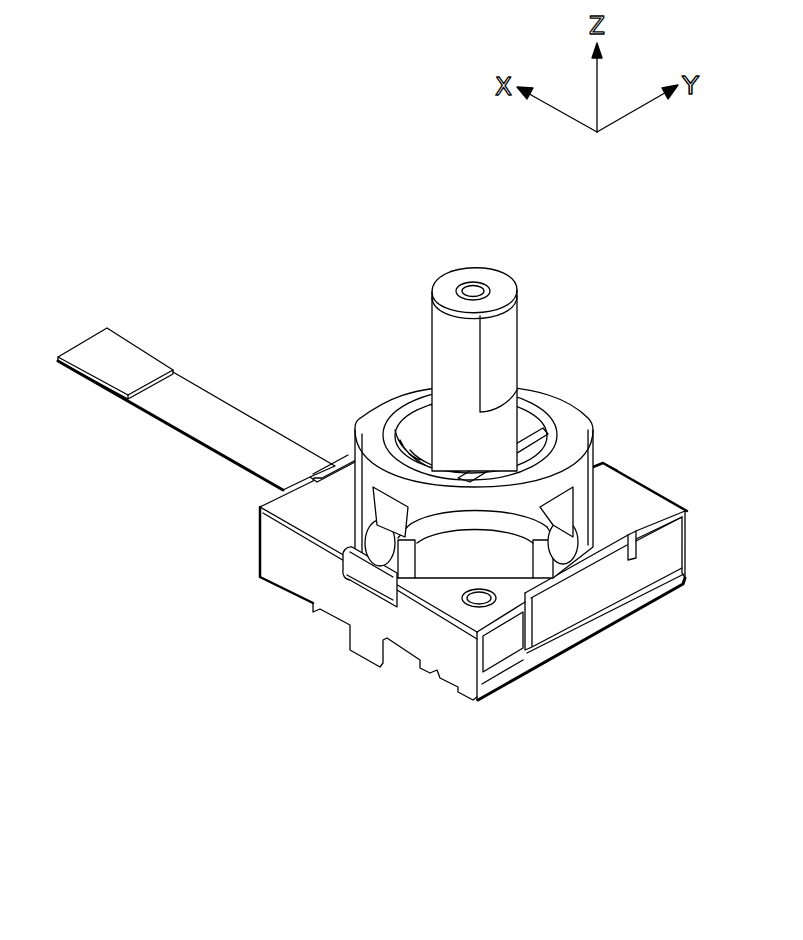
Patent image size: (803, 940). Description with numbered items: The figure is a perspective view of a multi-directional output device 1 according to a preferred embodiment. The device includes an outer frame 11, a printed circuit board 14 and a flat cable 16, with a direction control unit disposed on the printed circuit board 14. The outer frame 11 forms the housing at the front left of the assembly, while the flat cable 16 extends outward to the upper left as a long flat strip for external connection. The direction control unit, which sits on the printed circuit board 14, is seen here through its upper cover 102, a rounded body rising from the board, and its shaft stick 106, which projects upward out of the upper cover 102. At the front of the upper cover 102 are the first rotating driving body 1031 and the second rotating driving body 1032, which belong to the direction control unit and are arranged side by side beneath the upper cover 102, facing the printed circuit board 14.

The multi-directional output device 1 is at (273, 232).
The outer frame 11 is at (268, 545).
The printed circuit board 14 is at (598, 620).
The flat cable 16 is at (170, 417).
The upper cover 102 is at (572, 430).
The shaft stick 106 is at (519, 332).
The first rotating driving body 1031 is at (383, 543).
The second rotating driving body 1032 is at (563, 540).